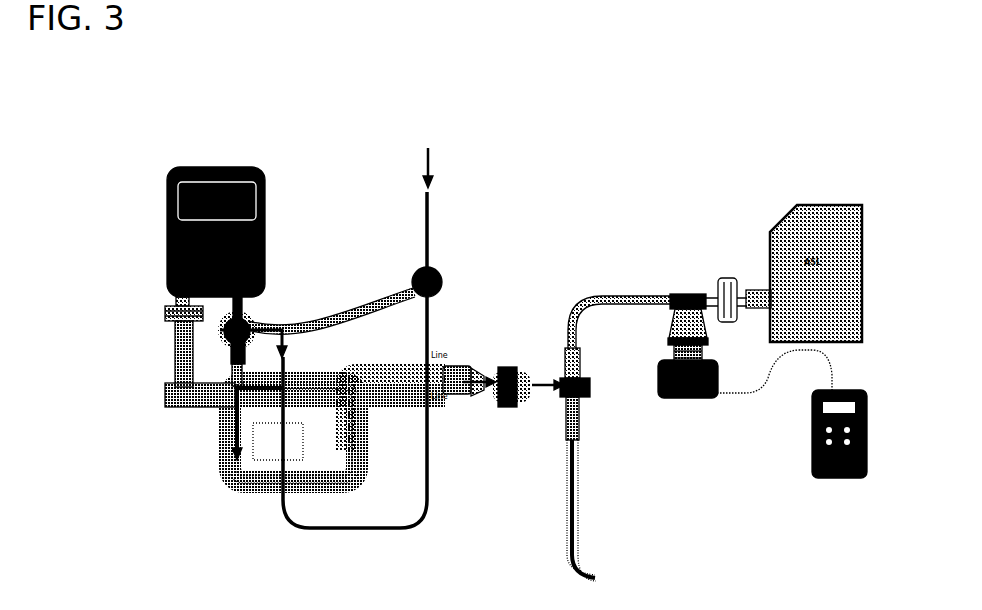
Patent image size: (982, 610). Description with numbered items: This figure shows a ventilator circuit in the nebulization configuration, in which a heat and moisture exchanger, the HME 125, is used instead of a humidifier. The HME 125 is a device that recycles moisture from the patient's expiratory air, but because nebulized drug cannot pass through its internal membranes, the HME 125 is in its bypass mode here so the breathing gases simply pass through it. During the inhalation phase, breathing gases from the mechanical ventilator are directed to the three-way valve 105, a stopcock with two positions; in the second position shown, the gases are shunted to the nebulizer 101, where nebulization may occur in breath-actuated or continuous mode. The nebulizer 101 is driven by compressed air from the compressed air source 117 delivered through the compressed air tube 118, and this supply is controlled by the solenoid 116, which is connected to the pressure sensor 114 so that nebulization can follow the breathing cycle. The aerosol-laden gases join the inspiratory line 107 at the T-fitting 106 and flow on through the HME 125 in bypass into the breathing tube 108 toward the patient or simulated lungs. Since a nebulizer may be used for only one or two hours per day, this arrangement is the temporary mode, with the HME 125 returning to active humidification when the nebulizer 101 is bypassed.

The nebulizer 101 is at (272, 447).
The three-way valve 105 is at (256, 312).
The T-fitting 106 is at (180, 381).
The inspiratory line 107 is at (262, 478).
The breathing tube 108 is at (623, 303).
The pressure sensor 114 is at (268, 268).
The solenoid 116 is at (443, 269).
The compressed air source 117 is at (435, 155).
The compressed air tube 118 is at (428, 487).
The HME 125 is at (517, 367).